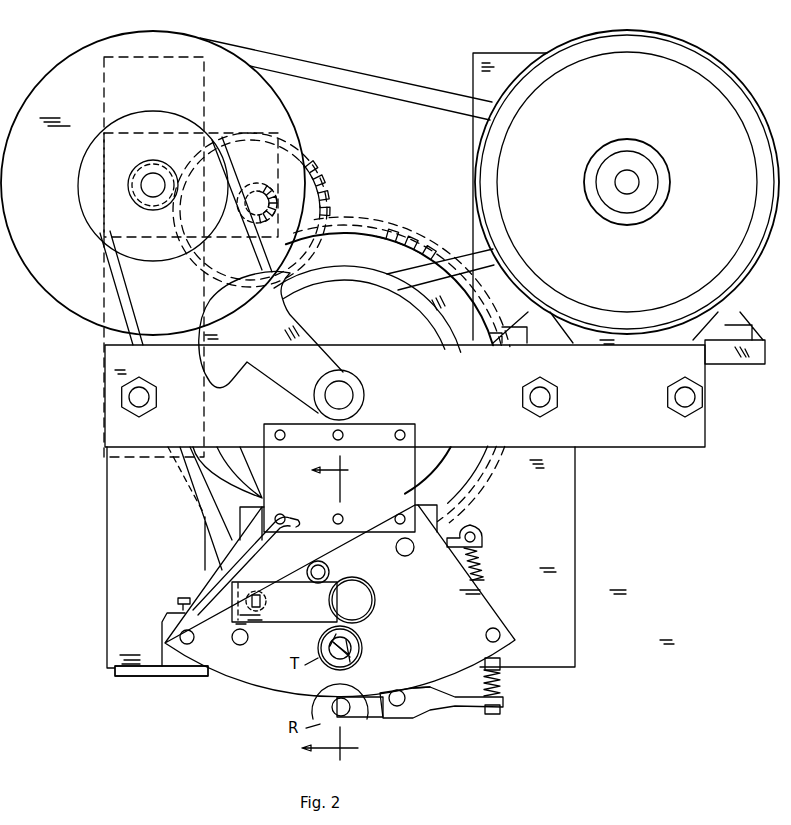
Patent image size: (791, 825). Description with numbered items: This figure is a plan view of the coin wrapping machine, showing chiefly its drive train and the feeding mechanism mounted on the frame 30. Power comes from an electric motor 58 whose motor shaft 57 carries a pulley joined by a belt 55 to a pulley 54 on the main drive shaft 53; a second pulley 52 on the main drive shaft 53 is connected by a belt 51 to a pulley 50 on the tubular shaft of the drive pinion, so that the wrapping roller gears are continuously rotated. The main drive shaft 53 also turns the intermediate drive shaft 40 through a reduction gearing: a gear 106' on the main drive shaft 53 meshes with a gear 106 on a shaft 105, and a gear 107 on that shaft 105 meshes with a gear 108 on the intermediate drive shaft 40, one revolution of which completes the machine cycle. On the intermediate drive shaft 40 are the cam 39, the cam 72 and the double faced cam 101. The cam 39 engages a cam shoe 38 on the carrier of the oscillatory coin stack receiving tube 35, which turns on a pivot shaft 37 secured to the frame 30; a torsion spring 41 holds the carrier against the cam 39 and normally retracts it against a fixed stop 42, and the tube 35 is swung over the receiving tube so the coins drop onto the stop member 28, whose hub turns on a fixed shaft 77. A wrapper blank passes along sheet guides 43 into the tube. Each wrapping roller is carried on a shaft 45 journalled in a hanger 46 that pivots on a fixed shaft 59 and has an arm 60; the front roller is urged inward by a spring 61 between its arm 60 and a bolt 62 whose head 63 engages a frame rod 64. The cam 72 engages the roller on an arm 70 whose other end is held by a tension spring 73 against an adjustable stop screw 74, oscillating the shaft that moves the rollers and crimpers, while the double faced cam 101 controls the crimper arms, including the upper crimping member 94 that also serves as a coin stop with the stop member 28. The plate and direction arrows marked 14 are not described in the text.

The mounting plate / direction arrows 14 is at (339, 592).
The stop member 28 is at (356, 643).
The frame 30 is at (500, 622).
The coin stack receiving tube 35 is at (368, 588).
The pivot shaft 37 is at (266, 603).
The cam shoe 38 is at (268, 552).
The cam 39 is at (293, 322).
The intermediate drive shaft 40 is at (350, 386).
The torsion spring 41 is at (228, 590).
The fixed stop 42 is at (328, 571).
The sheet guides 43 is at (126, 666).
The shaft 45 is at (346, 704).
The hanger 46 is at (430, 687).
The pulley 50 is at (292, 698).
The belt 51 is at (203, 513).
The pulley 52 is at (160, 110).
The main drive shaft 53 is at (141, 195).
The pulley 54 is at (56, 300).
The belt 55 is at (408, 88).
The motor shaft 57 is at (640, 181).
The electric motor 58 is at (720, 66).
The fixed shaft 59 is at (398, 690).
The arm 60 is at (465, 708).
The spring 61 is at (503, 681).
The bolt 62 is at (503, 710).
The head 63 is at (503, 664).
The frame rod 64 is at (500, 635).
The arm 70 is at (483, 537).
The cam 72 is at (257, 494).
The tension spring 73 is at (480, 556).
The adjustable stop screw 74 is at (483, 573).
The fixed shaft 77 is at (236, 644).
The upper crimping member 94 is at (362, 656).
The double faced cam 101 is at (447, 472).
The shaft 105 is at (258, 186).
The gear 106 is at (273, 210).
The gear 106' is at (143, 175).
The gear 107 is at (312, 166).
The gear 108 is at (400, 234).